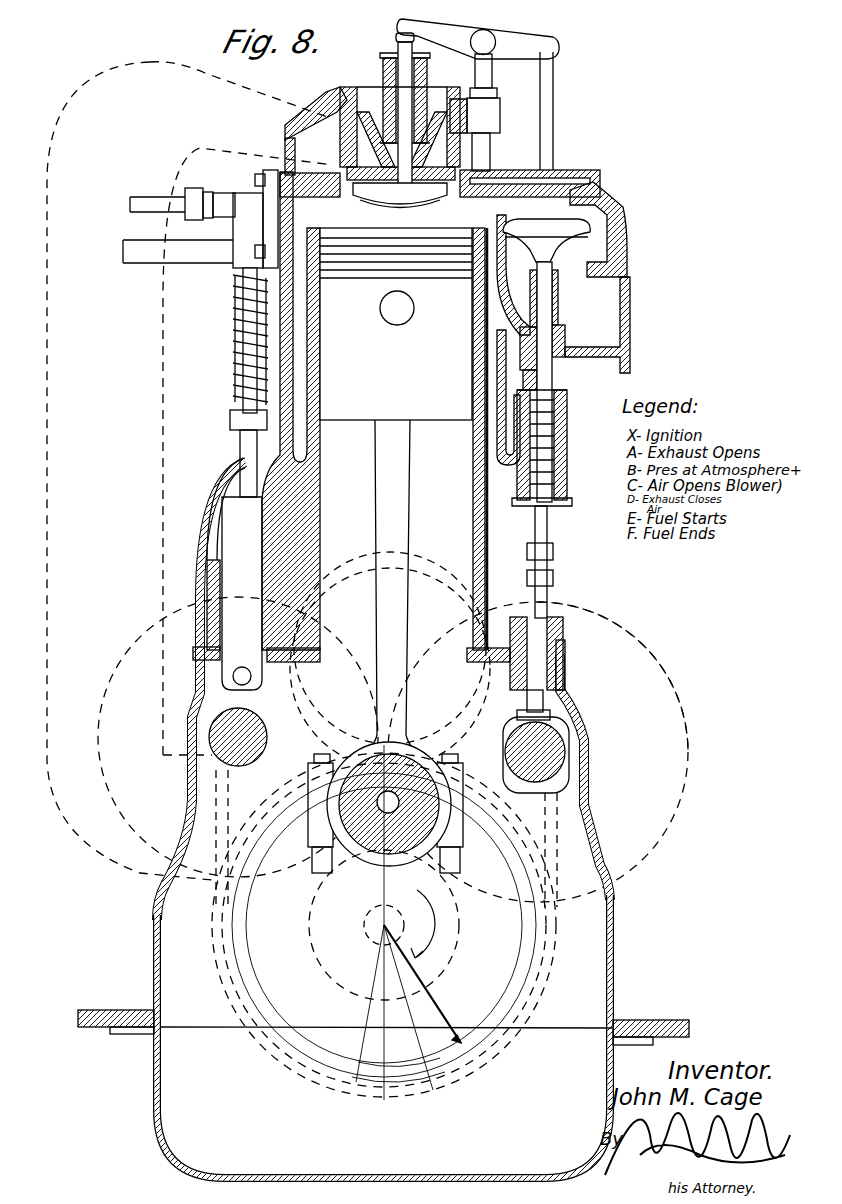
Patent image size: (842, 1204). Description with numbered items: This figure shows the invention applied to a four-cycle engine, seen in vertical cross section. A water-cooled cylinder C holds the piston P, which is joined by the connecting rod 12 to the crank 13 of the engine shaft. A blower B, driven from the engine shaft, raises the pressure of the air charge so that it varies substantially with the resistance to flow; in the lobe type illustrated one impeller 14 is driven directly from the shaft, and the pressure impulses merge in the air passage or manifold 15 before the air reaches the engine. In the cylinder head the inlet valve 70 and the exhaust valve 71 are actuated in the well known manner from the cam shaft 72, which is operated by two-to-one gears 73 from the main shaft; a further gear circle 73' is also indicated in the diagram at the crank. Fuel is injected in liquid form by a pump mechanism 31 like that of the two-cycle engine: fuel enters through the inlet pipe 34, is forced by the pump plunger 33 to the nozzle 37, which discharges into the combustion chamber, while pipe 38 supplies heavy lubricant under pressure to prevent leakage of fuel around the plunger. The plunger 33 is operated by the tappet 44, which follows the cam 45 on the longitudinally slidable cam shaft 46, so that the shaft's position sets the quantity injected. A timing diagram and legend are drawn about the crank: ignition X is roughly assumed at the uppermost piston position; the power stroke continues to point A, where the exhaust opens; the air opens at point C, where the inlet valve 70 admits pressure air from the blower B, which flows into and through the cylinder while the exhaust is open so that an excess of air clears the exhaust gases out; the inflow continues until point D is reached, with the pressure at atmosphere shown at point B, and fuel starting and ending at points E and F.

The connecting rod 12 is at (393, 507).
The crank 13 is at (414, 760).
The impeller 14 is at (523, 970).
The air passage or manifold 15 is at (434, 580).
The pump body 31 is at (253, 217).
The pump plunger 33 is at (247, 343).
The inlet pipe 34 is at (148, 202).
The nozzle 37 is at (308, 205).
The lubricant pipe 38 is at (163, 250).
The tappet 44 is at (233, 563).
The cam 45 is at (245, 697).
The cam shaft 46 is at (258, 740).
The inlet valve 70 is at (390, 196).
The exhaust valve 71 is at (570, 220).
The cam shaft 72 is at (557, 733).
The two-to-one gears 73 is at (625, 729).
The inner cam circle 73' is at (384, 937).
The piston P is at (396, 324).
The ignition point X is at (403, 797).
The cylinder C is at (634, 398).
The blower B is at (450, 698).